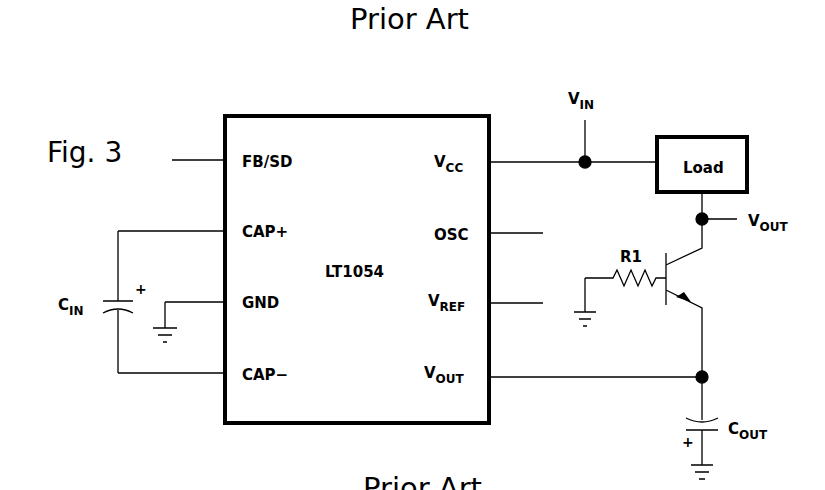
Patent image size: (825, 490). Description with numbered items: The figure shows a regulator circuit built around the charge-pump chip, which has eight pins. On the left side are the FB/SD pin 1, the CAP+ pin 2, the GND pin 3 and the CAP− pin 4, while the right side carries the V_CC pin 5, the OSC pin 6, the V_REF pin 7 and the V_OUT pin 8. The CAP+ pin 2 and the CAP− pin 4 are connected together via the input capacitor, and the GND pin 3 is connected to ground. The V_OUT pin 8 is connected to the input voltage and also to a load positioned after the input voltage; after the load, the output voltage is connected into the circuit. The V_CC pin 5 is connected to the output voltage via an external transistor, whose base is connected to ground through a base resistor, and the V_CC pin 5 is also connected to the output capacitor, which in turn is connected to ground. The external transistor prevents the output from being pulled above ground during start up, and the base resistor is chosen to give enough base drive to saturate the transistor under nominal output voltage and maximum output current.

The FB/SD pin 1 is at (198, 148).
The CAP+ pin 2 is at (171, 219).
The GND pin 3 is at (189, 310).
The CAP− pin 4 is at (171, 361).
The V_CC pin 5 is at (595, 365).
The OSC pin 6 is at (516, 291).
The V_REF pin 7 is at (516, 221).
The V_OUT pin 8 is at (573, 150).